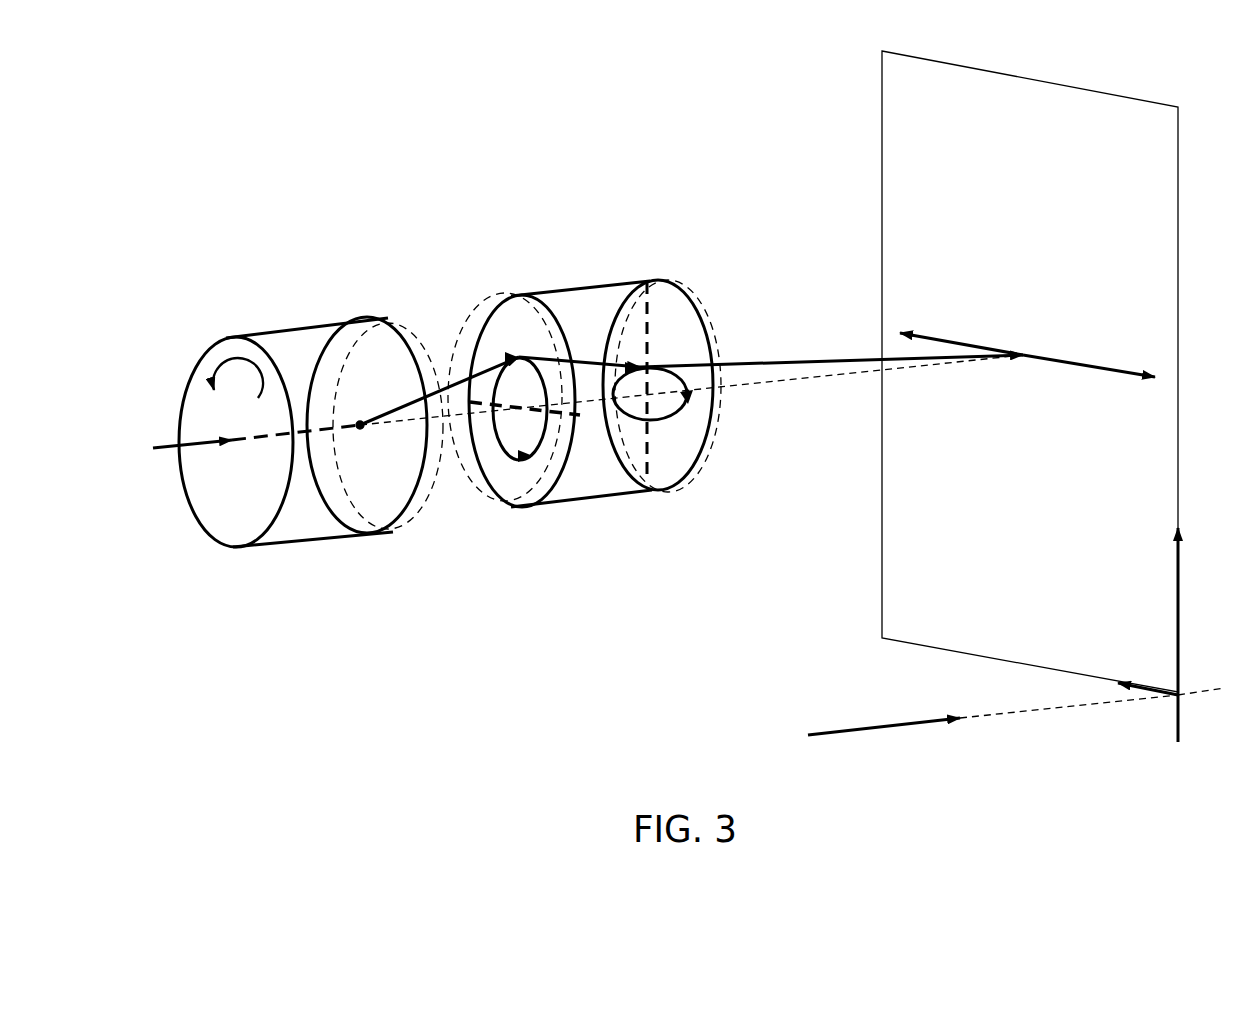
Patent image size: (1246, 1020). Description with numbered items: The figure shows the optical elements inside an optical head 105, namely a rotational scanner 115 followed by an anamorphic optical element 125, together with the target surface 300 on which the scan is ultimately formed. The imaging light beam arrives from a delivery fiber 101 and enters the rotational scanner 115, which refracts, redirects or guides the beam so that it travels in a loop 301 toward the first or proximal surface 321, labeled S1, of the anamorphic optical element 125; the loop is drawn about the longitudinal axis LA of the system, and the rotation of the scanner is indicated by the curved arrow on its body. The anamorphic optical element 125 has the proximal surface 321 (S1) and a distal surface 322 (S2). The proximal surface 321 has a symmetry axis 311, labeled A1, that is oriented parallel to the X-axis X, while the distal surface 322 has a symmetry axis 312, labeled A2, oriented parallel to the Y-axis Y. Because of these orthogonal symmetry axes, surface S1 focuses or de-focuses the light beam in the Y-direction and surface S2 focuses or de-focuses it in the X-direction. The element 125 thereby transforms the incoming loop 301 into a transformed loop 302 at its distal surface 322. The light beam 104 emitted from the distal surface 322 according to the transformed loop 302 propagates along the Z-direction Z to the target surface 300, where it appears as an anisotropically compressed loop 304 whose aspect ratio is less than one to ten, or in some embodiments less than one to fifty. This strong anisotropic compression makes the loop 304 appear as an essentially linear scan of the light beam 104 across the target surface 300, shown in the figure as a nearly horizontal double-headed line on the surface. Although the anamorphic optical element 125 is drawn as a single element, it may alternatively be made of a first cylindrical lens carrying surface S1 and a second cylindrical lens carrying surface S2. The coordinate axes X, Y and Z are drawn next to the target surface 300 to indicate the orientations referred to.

The optical head 105 is at (423, 125).
The rotational scanner 115 is at (317, 327).
The delivery fiber 101 is at (163, 445).
The loop 301 is at (495, 383).
The longitudinal axis LA is at (755, 385).
The anamorphic optical element 125 is at (620, 278).
The proximal surface S1 is at (502, 315).
The distal surface S2 is at (652, 467).
The proximal surface 321 is at (534, 346).
The symmetry axis A1 is at (522, 410).
The symmetry axis 311 is at (527, 408).
The symmetry axis 312 is at (655, 316).
The symmetry axis A2 is at (652, 312).
The distal surface 322 is at (693, 446).
The transformed loop 302 is at (683, 397).
The light beam 104 is at (822, 362).
The anisotropically compressed loop 304 is at (1098, 365).
The target surface 300 is at (988, 159).
The X-axis X is at (1156, 665).
The Y-axis Y is at (1158, 623).
The Z axis Z is at (975, 728).